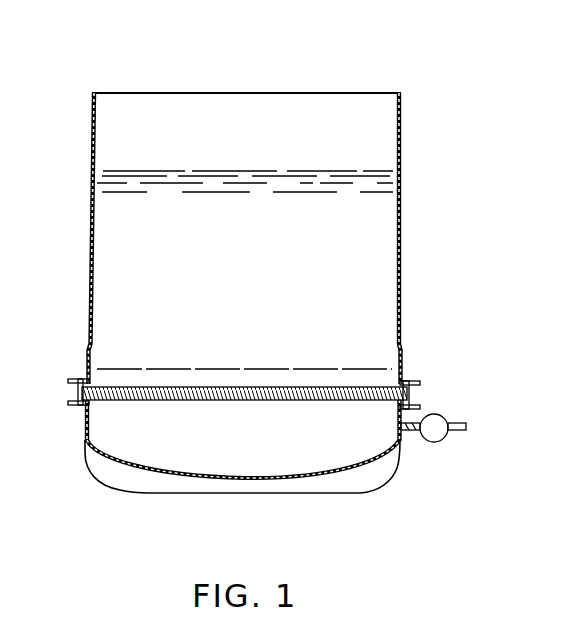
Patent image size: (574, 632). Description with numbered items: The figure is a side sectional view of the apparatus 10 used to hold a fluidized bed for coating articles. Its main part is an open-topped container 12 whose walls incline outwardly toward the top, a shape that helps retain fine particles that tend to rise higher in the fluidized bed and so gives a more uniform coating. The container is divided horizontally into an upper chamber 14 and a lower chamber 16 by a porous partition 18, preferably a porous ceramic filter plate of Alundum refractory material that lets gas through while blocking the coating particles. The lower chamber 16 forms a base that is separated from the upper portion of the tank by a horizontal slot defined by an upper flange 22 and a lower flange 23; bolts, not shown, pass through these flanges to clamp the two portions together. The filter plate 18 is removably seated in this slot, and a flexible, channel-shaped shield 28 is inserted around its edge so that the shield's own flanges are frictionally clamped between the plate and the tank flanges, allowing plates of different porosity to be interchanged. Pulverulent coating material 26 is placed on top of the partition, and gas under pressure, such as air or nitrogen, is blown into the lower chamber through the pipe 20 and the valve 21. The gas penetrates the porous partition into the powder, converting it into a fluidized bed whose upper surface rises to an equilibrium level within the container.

The apparatus 10 is at (253, 533).
The container 12 is at (235, 115).
The upper chamber 14 is at (250, 308).
The lower chamber 16 is at (257, 444).
The porous partition 18 is at (102, 400).
The pipe 20 is at (408, 431).
The valve 21 is at (437, 442).
The upper flange 22 is at (416, 381).
The lower flange 23 is at (420, 405).
The coating material 26 is at (373, 173).
The channel-shaped shield 28 is at (408, 394).